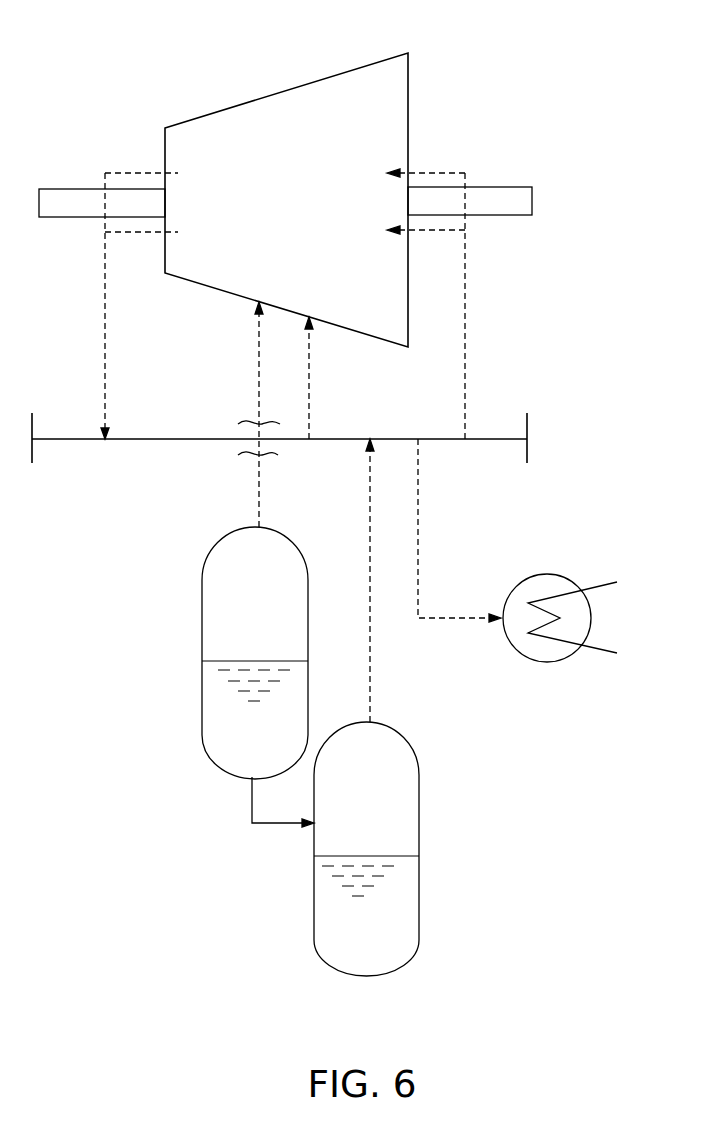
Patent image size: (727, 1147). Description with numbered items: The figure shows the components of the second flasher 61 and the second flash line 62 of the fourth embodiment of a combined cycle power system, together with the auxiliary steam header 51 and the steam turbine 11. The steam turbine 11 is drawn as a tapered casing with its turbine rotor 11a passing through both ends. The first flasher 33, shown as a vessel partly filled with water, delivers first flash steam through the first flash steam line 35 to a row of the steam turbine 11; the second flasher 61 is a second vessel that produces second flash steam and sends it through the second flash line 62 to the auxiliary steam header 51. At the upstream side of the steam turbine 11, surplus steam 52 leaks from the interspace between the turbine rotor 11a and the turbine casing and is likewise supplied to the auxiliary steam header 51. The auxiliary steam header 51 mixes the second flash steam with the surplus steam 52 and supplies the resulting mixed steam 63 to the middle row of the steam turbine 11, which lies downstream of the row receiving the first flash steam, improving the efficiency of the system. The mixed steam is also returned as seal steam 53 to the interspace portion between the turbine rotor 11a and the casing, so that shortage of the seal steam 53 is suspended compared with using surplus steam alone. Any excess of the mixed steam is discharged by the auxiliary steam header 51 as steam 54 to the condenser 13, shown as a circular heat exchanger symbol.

The steam turbine 11 is at (310, 83).
The turbine rotor 11a is at (494, 196).
The condenser 13 is at (593, 618).
The first flasher 33 is at (202, 576).
The first flash steam line 35 is at (258, 493).
The auxiliary steam header 51 is at (60, 439).
The surplus steam 52 is at (105, 345).
The seal steam 53 is at (465, 362).
The steam discharged to condenser 54 is at (420, 492).
The second flasher 61 is at (420, 797).
The second flash line 62 is at (370, 493).
The mixed steam 63 is at (311, 365).